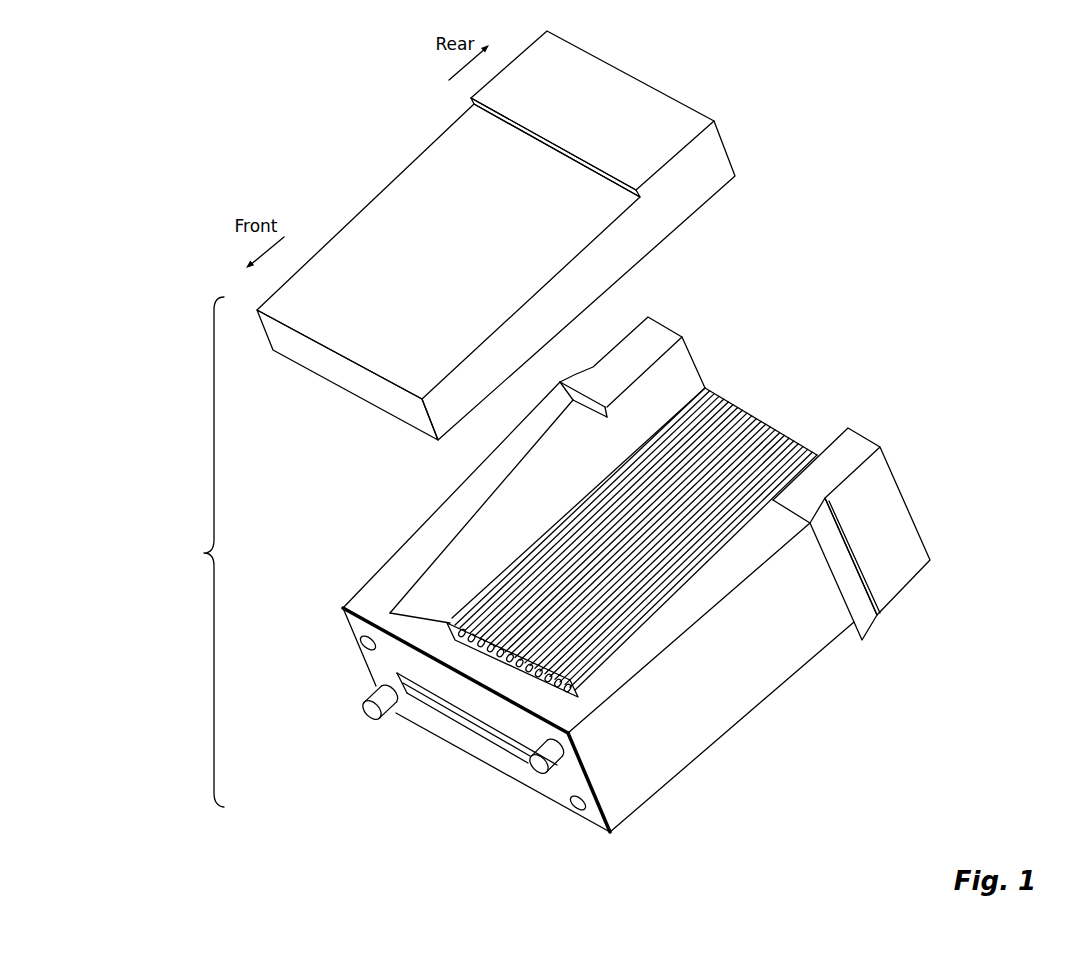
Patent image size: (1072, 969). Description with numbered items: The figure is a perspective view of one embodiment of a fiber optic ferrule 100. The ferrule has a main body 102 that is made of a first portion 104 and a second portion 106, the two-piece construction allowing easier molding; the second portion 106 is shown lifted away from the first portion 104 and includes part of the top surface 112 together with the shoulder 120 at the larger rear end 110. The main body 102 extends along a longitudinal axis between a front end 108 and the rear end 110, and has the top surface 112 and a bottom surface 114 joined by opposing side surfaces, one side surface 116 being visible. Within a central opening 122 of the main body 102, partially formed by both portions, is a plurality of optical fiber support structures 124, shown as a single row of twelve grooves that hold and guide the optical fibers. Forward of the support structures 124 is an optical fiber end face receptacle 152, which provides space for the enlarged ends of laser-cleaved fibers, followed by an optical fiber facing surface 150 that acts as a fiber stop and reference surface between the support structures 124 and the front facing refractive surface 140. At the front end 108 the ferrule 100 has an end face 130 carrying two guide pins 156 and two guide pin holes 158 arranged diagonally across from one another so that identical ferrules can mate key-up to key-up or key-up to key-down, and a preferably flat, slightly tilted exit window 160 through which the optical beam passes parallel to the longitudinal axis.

The fiber optic ferrule 100 is at (975, 140).
The main body 102 is at (207, 553).
The first portion 104 is at (762, 726).
The second portion 106 is at (712, 160).
The front end 108 is at (519, 804).
The rear end 110 is at (652, 601).
The top surface 112 is at (380, 236).
The bottom surface 114 is at (822, 657).
The side surface 116 is at (716, 727).
The shoulder 120 is at (469, 99).
The central opening 122 is at (717, 380).
The optical fiber support structures 124 is at (792, 430).
The end face 130 is at (494, 765).
The front facing refractive surface 140 is at (442, 621).
The optical fiber facing surface 150 is at (588, 702).
The optical fiber end face receptacle 152 is at (456, 627).
The guide pin 156 is at (374, 718).
The guide pin hole 158 is at (358, 643).
The exit window 160 is at (466, 722).